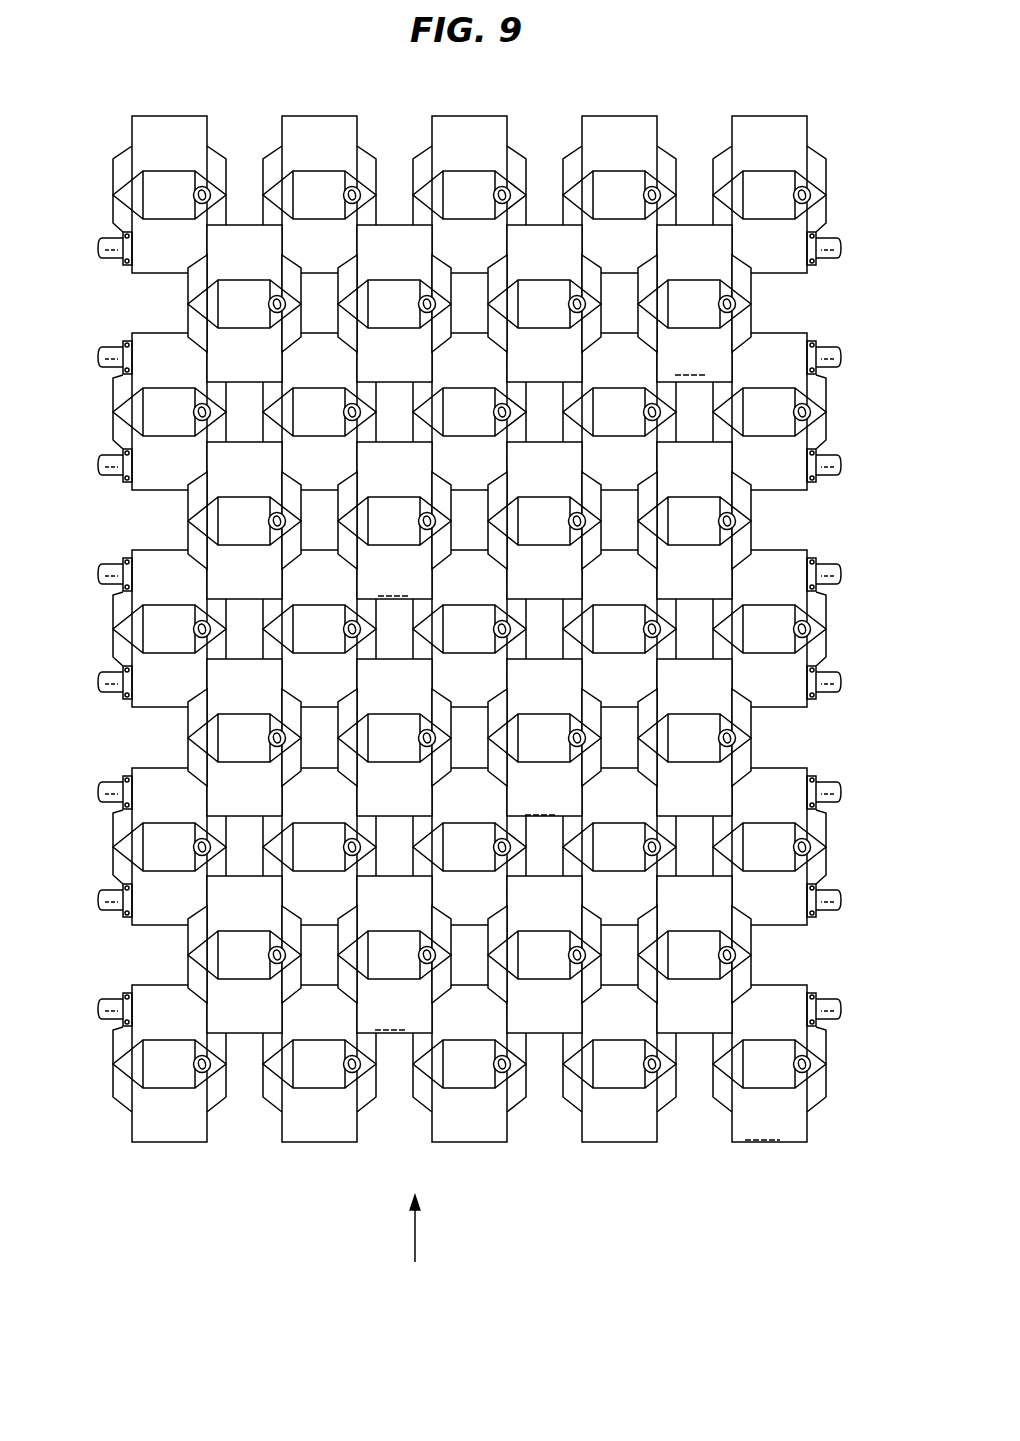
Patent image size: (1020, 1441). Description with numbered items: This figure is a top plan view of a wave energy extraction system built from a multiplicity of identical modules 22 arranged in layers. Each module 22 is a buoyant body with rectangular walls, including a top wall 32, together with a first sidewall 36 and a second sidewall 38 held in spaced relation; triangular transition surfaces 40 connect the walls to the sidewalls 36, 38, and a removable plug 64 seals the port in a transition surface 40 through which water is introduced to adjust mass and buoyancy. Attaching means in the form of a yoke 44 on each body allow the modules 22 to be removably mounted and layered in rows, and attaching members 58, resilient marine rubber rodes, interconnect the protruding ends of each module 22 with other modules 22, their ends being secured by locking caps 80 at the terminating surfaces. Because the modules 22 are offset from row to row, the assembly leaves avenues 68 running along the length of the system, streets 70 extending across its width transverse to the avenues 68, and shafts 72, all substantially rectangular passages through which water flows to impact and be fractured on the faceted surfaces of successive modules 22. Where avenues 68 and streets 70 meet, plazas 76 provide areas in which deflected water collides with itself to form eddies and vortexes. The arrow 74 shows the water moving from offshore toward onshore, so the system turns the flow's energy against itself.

The module 22 is at (654, 95).
The top wall 32 is at (158, 850).
The first sidewall 36 is at (229, 170).
The second sidewall 38 is at (113, 165).
The transition surface 40 is at (124, 190).
The yoke 44 is at (171, 128).
The attaching member 58 is at (840, 250).
The removable plug 64 is at (508, 186).
The avenue 68 is at (398, 1092).
The street 70 is at (155, 958).
The shaft 72 is at (308, 320).
The arrow 74 is at (410, 1232).
The plaza 76 is at (233, 1118).
The locking cap 80 is at (816, 568).